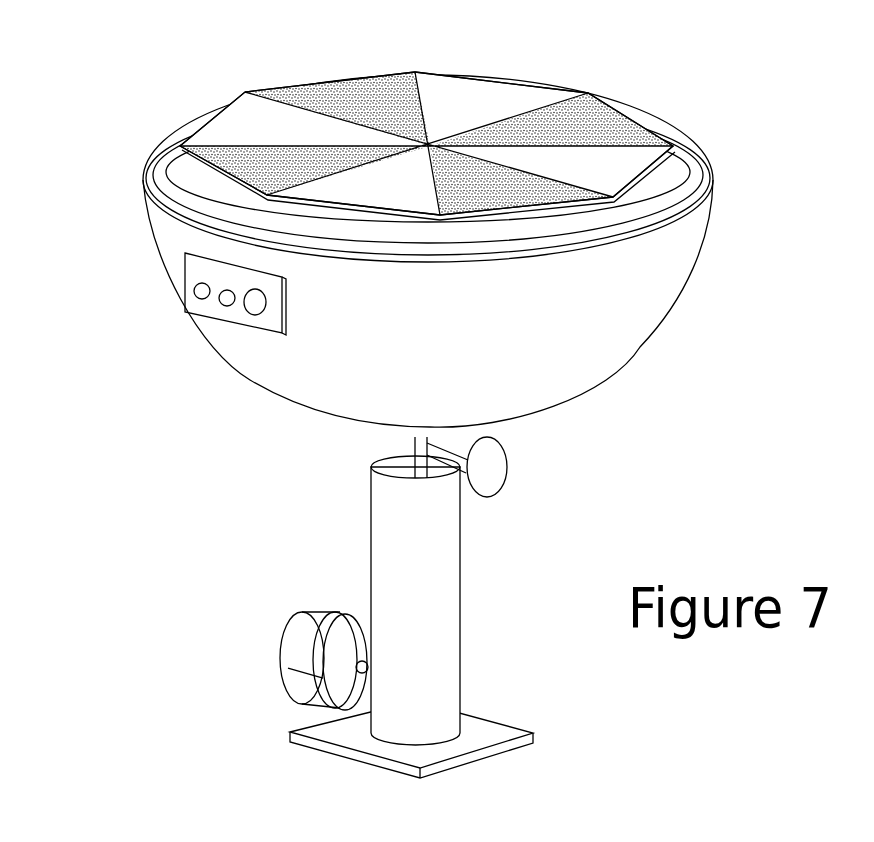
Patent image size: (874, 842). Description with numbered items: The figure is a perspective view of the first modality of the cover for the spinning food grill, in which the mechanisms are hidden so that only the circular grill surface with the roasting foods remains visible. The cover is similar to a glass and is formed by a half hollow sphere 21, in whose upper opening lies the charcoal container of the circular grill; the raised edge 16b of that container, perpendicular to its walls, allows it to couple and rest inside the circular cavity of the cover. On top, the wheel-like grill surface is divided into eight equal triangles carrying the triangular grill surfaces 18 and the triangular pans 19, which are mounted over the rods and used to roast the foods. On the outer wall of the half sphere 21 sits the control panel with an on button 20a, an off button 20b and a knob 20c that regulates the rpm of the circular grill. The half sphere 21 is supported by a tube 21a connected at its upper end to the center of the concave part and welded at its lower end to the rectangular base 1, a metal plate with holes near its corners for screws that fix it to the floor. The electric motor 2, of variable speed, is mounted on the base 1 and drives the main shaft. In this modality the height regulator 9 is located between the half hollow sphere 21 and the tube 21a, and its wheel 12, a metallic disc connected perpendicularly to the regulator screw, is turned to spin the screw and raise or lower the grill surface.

The rectangular base 1 is at (492, 735).
The electric motor 2 is at (315, 647).
The height regulator 9 is at (397, 447).
The wheel 12 is at (490, 477).
The raised edge 16b is at (157, 178).
The triangular grill surfaces 18 is at (637, 118).
The triangular pans 19 is at (510, 83).
The on button 20a is at (188, 292).
The off button 20b is at (213, 315).
The knob 20c is at (250, 317).
The half hollow sphere 21 is at (583, 327).
The tube 21a is at (435, 547).